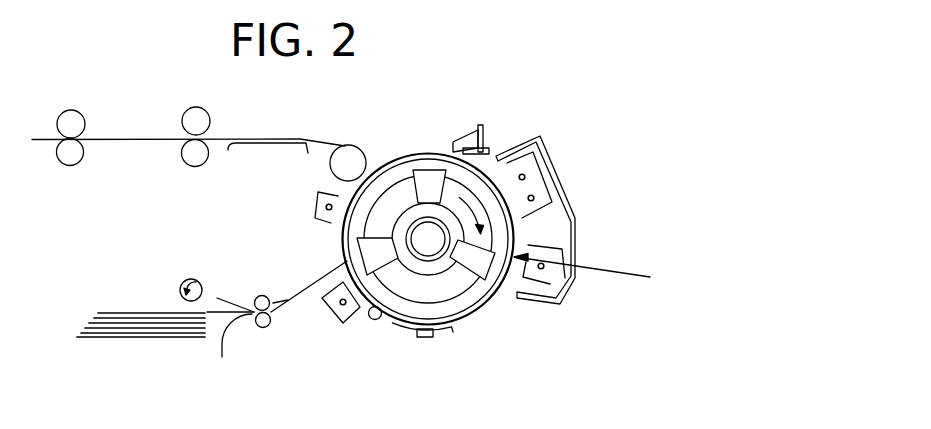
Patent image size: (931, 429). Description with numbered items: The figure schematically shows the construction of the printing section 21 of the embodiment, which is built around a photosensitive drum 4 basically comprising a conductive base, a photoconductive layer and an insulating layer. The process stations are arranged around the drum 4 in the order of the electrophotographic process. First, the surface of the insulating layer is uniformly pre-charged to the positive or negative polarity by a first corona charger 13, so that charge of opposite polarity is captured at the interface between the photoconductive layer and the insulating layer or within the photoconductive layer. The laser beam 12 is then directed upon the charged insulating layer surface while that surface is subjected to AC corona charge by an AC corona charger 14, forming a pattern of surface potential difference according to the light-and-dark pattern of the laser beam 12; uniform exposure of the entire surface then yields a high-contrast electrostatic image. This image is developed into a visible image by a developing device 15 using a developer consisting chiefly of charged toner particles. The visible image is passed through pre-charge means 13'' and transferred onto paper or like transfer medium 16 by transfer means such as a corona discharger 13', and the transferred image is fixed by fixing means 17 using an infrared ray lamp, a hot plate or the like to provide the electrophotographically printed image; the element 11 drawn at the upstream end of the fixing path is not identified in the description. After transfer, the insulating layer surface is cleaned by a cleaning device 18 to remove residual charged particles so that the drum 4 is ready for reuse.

The photosensitive drum 4 is at (405, 152).
The web material 11 is at (44, 137).
The laser beam 12 is at (607, 269).
The first corona charger 13 is at (552, 182).
The corona discharger 13' is at (300, 207).
The pre-charge means 13'' is at (333, 311).
The AC corona charger 14 is at (538, 285).
The developing device 15 is at (447, 330).
The transfer medium 16 is at (147, 338).
The fixing means 17 is at (255, 137).
The cleaning device 18 is at (462, 142).
The printing section 21 is at (504, 143).